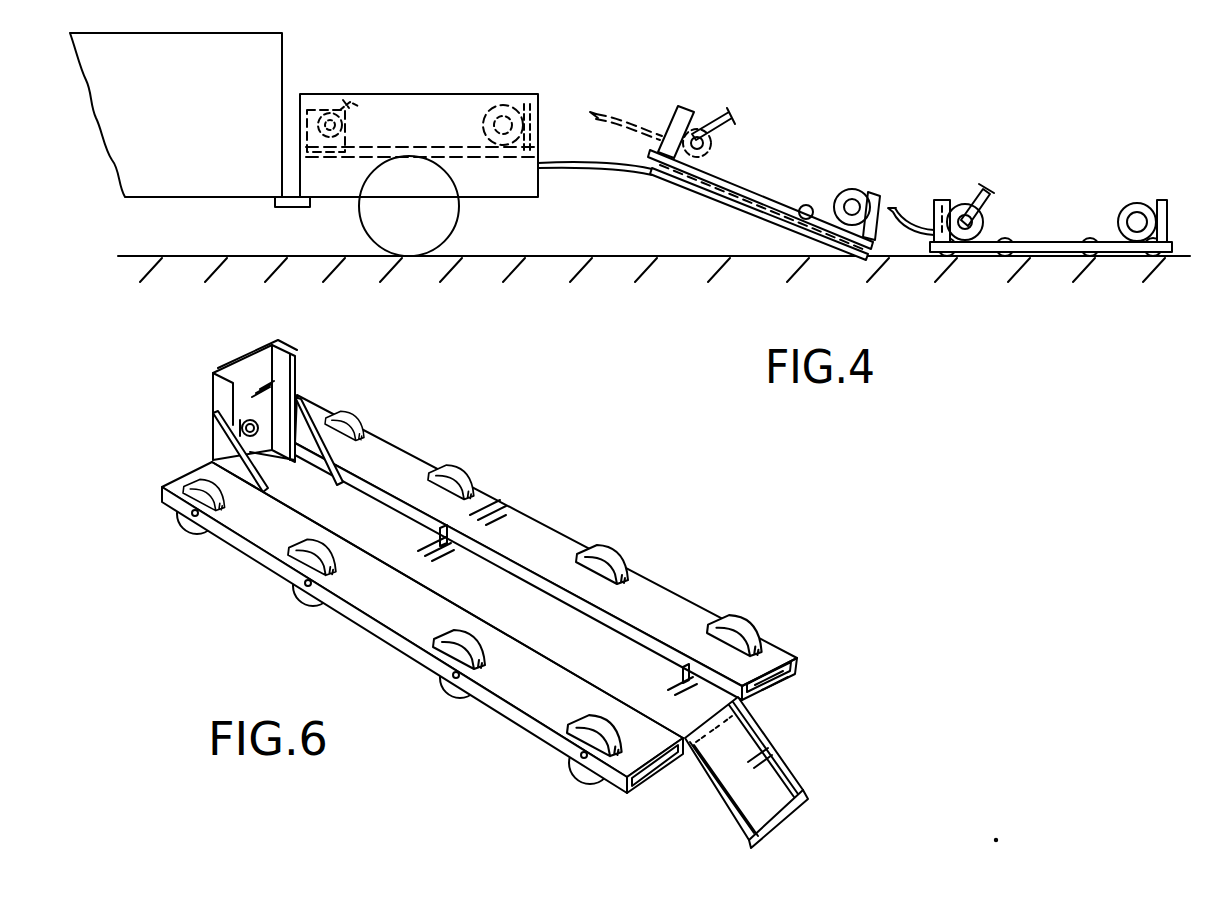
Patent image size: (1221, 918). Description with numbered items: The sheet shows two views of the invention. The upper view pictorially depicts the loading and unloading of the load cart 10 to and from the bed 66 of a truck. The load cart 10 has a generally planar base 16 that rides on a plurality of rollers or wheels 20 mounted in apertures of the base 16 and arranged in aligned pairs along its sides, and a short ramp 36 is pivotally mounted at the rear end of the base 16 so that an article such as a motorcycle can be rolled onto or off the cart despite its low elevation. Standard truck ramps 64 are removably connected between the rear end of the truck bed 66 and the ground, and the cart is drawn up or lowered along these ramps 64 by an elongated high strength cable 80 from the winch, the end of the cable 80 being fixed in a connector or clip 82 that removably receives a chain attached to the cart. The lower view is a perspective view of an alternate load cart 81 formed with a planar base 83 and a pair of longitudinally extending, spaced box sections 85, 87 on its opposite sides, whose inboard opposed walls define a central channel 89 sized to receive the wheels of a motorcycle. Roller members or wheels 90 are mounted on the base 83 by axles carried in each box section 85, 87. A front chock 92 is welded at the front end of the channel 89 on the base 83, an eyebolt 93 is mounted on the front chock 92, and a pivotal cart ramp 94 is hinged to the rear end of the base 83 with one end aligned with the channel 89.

In FIG. 4, the load cart 10 is at (470, 152).
In FIG. 4, the base 16 is at (1040, 238).
In FIG. 4, the rollers or wheels 20 is at (660, 172).
In FIG. 4, the short ramp 36 is at (1163, 200).
In FIG. 4, the truck ramps 64 is at (772, 222).
In FIG. 4, the truck bed 66 is at (538, 146).
In FIG. 4, the cable 80 is at (917, 230).
In FIG. 6, the alternate load cart 81 is at (600, 484).
In FIG. 4, the connector or clip 82 is at (920, 230).
In FIG. 6, the planar base 83 is at (537, 612).
In FIG. 6, the box section 85 is at (527, 690).
In FIG. 6, the box section 87 is at (653, 594).
In FIG. 6, the central channel 89 is at (643, 650).
In FIG. 6, the roller members or wheels 90 is at (360, 428).
In FIG. 6, the front chock 92 is at (337, 355).
In FIG. 6, the eyebolt 93 is at (246, 422).
In FIG. 6, the pivotal cart ramp 94 is at (757, 777).